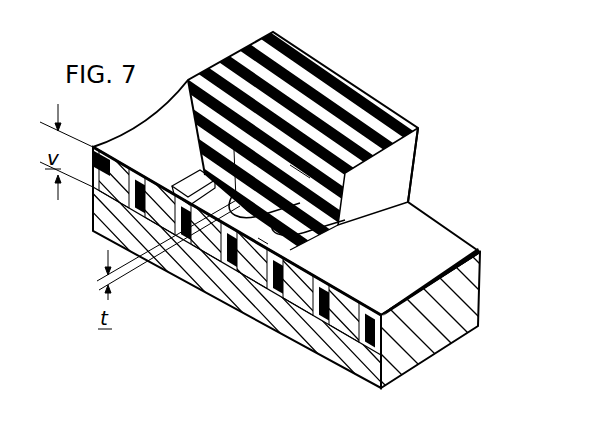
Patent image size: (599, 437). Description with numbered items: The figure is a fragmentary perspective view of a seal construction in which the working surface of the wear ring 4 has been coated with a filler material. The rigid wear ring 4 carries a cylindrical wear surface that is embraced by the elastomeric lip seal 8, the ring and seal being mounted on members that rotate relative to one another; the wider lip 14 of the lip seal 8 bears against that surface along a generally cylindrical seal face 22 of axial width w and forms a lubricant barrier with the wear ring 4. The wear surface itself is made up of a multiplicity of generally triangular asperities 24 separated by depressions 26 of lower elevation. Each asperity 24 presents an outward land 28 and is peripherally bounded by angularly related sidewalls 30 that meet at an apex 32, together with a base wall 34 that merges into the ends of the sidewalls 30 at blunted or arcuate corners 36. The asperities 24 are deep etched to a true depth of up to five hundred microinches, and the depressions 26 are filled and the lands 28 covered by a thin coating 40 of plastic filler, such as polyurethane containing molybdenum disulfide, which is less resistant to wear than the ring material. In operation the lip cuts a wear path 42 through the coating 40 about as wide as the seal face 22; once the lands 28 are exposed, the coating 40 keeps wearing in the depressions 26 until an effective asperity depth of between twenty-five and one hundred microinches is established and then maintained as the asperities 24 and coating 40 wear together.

The wear ring 4 is at (337, 352).
The lip seal 8 is at (414, 119).
The lip 14 is at (400, 168).
The seal face 22 is at (234, 190).
The asperities 24 is at (192, 240).
The depressions 26 is at (300, 192).
The land 28 is at (350, 90).
The sidewalls 30 is at (270, 215).
The apex 32 is at (263, 240).
The base wall 34 is at (200, 200).
The arcuate corners 36 is at (200, 197).
The coating 40 is at (446, 240).
The wear path 42 is at (290, 237).